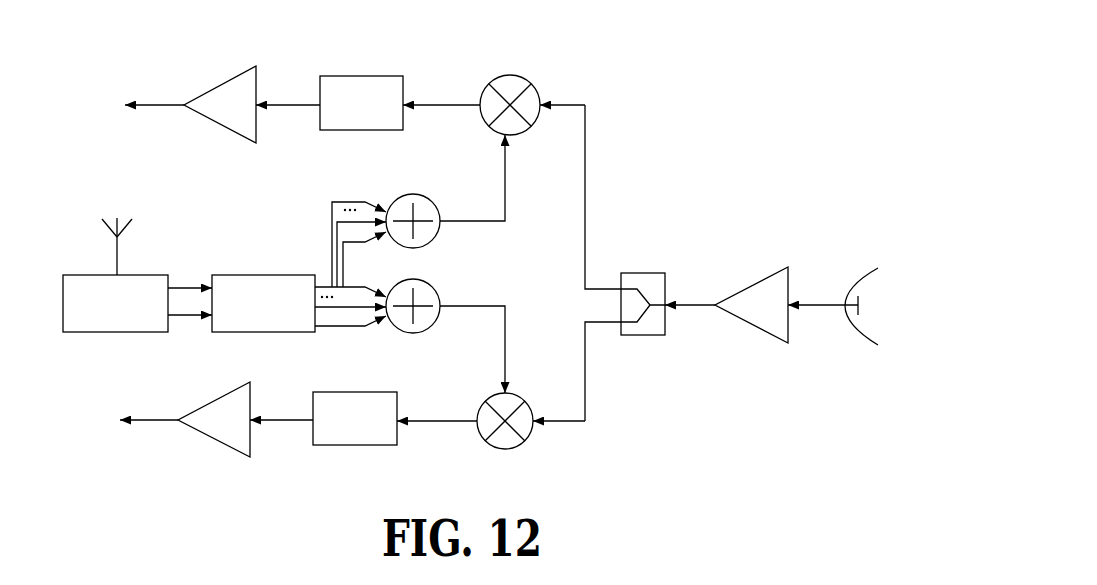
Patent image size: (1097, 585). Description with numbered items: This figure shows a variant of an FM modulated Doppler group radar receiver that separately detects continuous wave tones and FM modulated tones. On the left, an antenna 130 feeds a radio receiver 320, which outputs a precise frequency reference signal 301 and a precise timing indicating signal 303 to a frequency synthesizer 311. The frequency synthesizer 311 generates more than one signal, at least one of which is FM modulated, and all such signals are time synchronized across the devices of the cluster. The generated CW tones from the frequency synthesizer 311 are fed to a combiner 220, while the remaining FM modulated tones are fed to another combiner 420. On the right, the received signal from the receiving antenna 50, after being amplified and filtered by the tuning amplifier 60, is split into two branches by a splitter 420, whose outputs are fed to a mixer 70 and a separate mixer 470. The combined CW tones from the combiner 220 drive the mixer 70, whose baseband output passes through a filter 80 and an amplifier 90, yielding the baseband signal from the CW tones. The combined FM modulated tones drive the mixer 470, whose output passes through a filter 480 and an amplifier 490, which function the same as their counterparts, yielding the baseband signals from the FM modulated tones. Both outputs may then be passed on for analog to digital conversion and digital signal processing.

The amplifier 490 is at (200, 92).
The filter 480 is at (320, 100).
The mixer 470 is at (485, 96).
The combiner / splitter 420 is at (400, 196).
The combiner 220 is at (432, 283).
The mixer 70 is at (476, 412).
The filter 80 is at (313, 410).
The amplifier 90 is at (190, 413).
The amplifier 60 is at (737, 293).
The receiving antenna 50 is at (862, 275).
The antenna 130 is at (135, 222).
The radio receiver 320 is at (78, 272).
The frequency reference signal 301 is at (187, 286).
The timing indicating signal 303 is at (175, 316).
The frequency synthesizer 311 is at (285, 274).